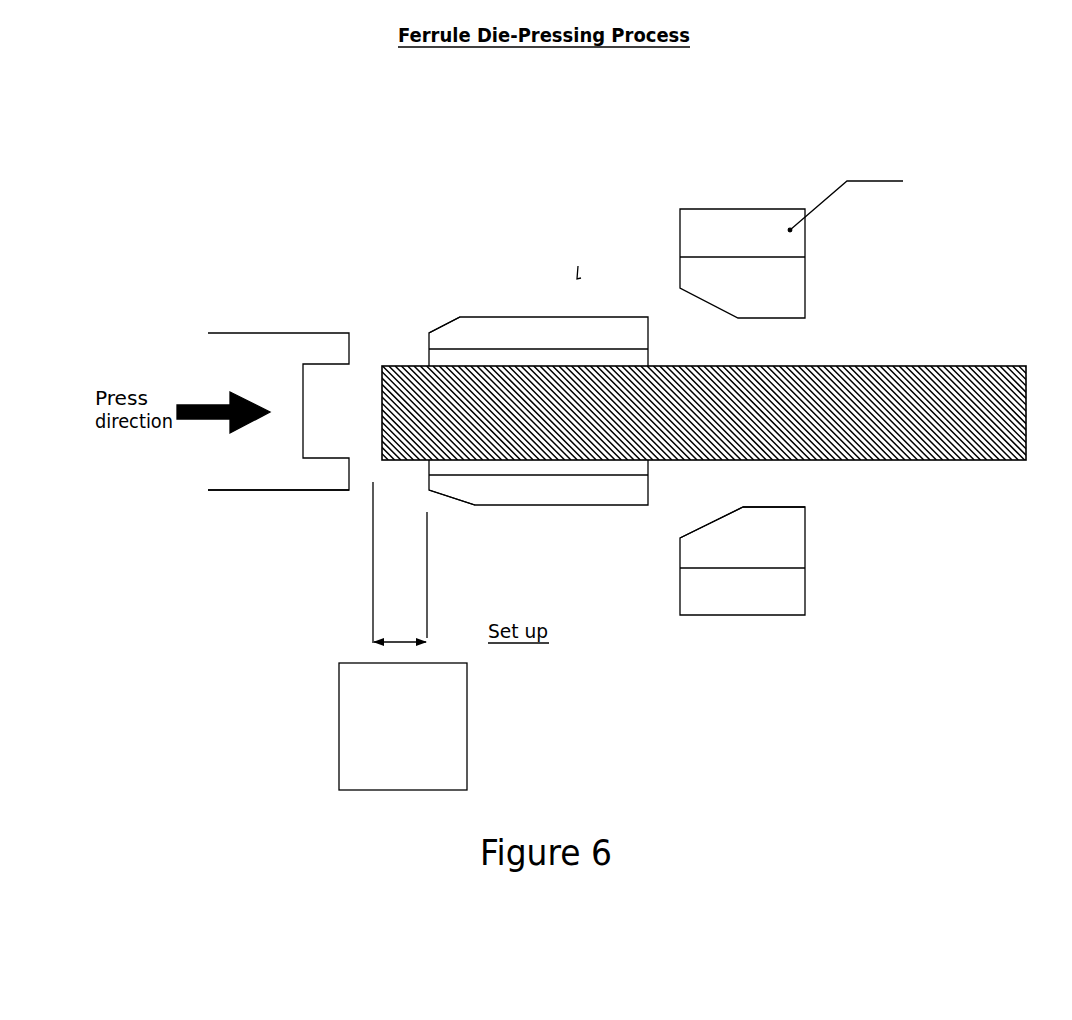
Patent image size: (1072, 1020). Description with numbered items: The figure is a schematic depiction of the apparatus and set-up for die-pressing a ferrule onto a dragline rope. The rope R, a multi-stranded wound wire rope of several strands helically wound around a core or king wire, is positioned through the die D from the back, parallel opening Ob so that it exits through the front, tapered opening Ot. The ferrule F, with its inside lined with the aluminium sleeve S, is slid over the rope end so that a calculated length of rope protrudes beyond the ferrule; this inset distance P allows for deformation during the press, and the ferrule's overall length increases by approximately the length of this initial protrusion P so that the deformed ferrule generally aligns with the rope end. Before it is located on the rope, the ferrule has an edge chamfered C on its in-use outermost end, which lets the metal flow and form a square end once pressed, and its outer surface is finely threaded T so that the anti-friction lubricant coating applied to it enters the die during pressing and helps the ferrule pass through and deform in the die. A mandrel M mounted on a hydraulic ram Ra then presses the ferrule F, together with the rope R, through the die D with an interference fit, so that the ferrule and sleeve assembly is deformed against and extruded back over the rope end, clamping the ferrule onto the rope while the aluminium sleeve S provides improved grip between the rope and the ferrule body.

The mandrel M is at (303, 342).
The aluminium sleeve S is at (425, 346).
The chamfered edge C is at (442, 314).
The ferrule F is at (602, 334).
The rope R is at (680, 413).
The die D is at (792, 295).
The fine threading T is at (537, 507).
The rope protrusion length P is at (403, 636).
The front tapered opening Ot is at (667, 525).
The back parallel opening Ob is at (823, 492).
The hydraulic ram Ra is at (200, 504).